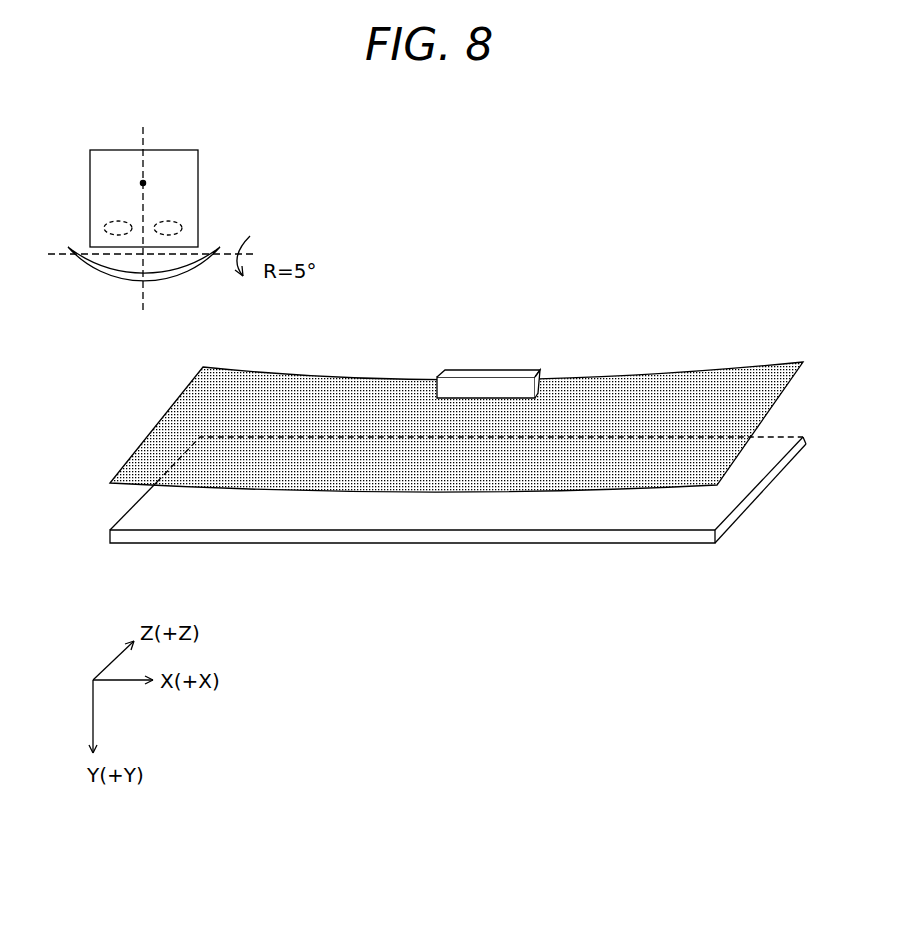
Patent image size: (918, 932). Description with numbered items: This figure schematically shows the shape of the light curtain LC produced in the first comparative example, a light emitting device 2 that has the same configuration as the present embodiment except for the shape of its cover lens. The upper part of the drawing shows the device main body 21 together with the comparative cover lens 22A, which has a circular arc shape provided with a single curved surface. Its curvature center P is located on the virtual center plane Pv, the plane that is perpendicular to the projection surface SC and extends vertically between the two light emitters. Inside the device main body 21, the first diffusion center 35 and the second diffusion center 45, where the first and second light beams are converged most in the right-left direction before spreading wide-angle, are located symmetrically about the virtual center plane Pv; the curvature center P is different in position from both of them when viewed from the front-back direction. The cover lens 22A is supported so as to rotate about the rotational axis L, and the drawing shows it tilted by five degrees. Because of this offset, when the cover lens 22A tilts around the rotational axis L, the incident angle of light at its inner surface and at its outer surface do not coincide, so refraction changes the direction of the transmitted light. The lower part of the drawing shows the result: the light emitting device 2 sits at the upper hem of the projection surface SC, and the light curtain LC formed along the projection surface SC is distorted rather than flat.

The light emitting device 2 is at (541, 376).
The device main body 21 is at (107, 150).
The cover lens 22A is at (92, 271).
The first diffusion center 35 is at (104, 220).
The second diffusion center 45 is at (184, 221).
The curvature center P is at (141, 183).
The virtual center plane Pv is at (144, 204).
The rotational axis L is at (140, 258).
The light curtain LC is at (715, 390).
The projection surface SC is at (730, 521).